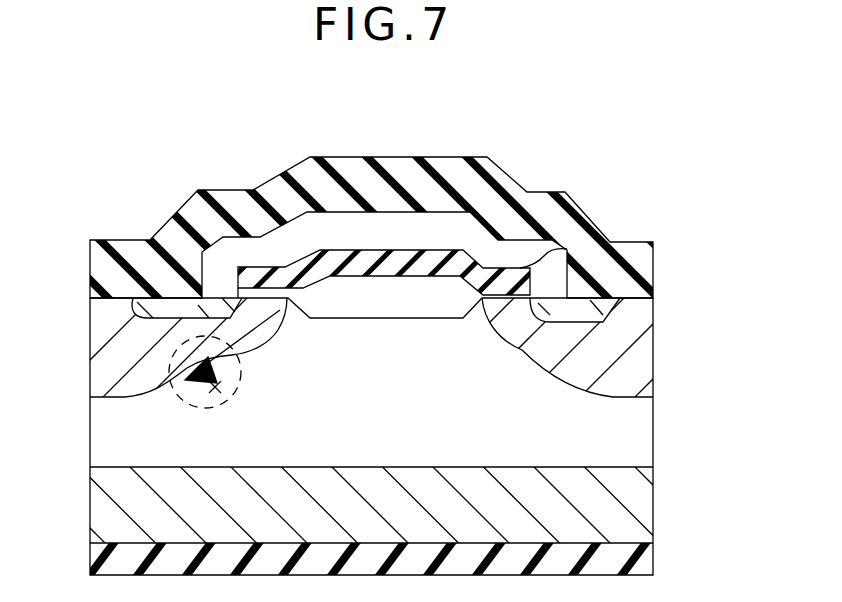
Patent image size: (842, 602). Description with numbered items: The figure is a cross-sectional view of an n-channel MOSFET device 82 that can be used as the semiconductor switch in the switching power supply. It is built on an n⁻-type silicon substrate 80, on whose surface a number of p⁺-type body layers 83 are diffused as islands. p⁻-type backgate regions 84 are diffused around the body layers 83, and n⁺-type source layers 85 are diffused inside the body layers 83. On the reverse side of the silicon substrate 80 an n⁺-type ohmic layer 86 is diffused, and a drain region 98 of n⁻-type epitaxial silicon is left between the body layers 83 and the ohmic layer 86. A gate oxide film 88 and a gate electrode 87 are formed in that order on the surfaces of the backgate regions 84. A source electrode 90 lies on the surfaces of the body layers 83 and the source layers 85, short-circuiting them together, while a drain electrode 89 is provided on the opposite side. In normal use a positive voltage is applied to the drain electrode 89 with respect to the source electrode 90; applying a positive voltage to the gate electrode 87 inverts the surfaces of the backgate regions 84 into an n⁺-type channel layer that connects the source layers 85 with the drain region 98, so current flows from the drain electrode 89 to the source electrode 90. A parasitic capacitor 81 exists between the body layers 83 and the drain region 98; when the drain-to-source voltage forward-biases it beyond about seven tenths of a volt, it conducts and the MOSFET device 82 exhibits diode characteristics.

The silicon substrate 80 is at (665, 307).
The parasitic capacitor 81 is at (232, 400).
The MOSFET device 82 is at (238, 148).
The body layers 83 is at (110, 350).
The backgate regions 84 is at (283, 318).
The source layers 85 is at (133, 310).
The ohmic layer 86 is at (117, 498).
The gate electrode 87 is at (563, 248).
The gate oxide film 88 is at (265, 295).
The drain electrode 89 is at (655, 560).
The source electrode 90 is at (145, 257).
The drain region 98 is at (123, 432).